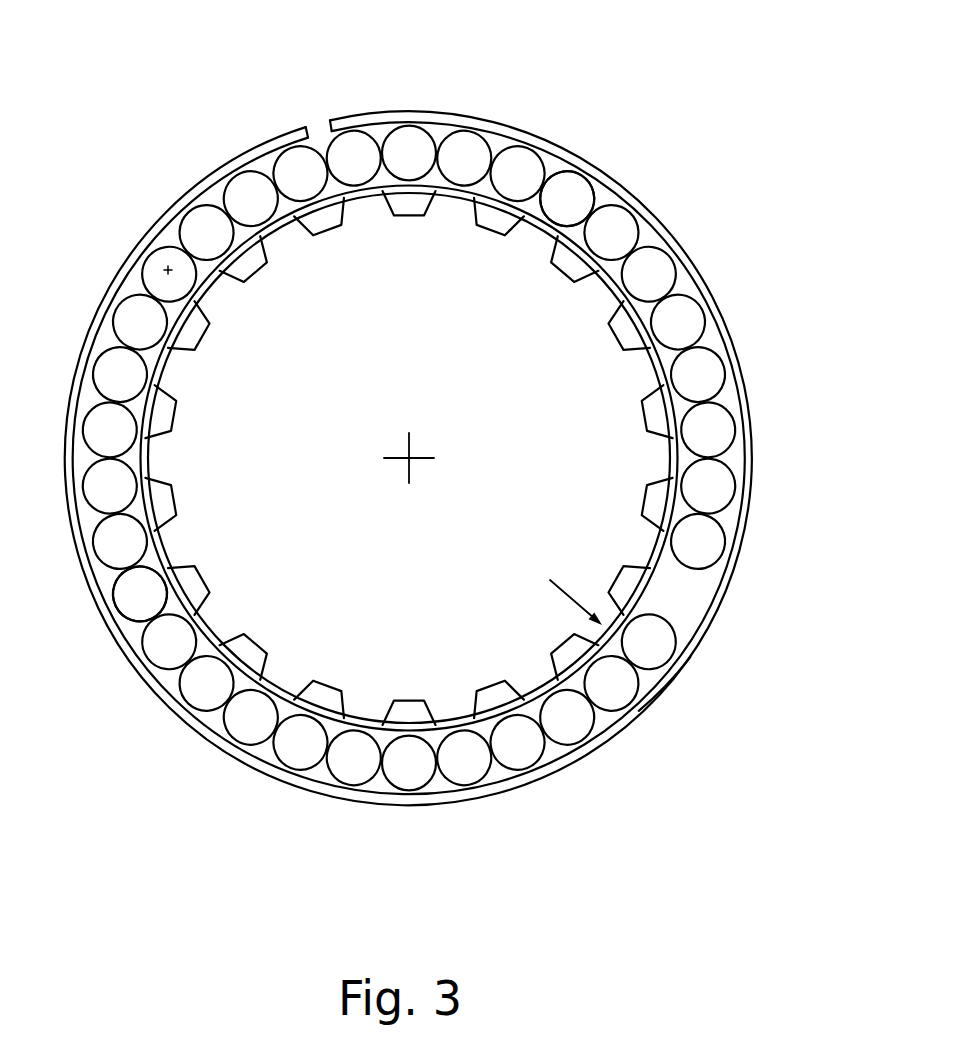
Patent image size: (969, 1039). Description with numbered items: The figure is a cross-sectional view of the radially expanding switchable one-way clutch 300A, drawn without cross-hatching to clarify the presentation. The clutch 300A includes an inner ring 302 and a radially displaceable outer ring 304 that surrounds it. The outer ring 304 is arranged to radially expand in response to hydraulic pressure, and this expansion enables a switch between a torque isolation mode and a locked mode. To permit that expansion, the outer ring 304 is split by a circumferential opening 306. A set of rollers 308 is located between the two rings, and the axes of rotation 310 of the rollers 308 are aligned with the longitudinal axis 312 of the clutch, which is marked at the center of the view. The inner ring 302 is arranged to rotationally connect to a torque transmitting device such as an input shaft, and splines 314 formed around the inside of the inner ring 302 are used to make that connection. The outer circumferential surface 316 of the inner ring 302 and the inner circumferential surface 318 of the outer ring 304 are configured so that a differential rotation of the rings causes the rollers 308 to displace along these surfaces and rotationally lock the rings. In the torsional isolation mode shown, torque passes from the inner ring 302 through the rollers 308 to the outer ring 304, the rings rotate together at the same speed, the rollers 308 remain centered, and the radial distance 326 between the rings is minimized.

The radially expanding switchable one-way clutch 300A is at (696, 104).
The inner ring 302 is at (668, 457).
The radially displaceable outer ring 304 is at (522, 120).
The circumferential opening 306 is at (318, 132).
The rollers 308 is at (133, 595).
The axes of rotation 310 is at (167, 262).
The longitudinal axis 312 is at (431, 447).
The splines 314 is at (320, 688).
The outer circumferential surface 316 is at (690, 512).
The inner circumferential surface 318 is at (548, 203).
The radial distance 326 is at (680, 696).